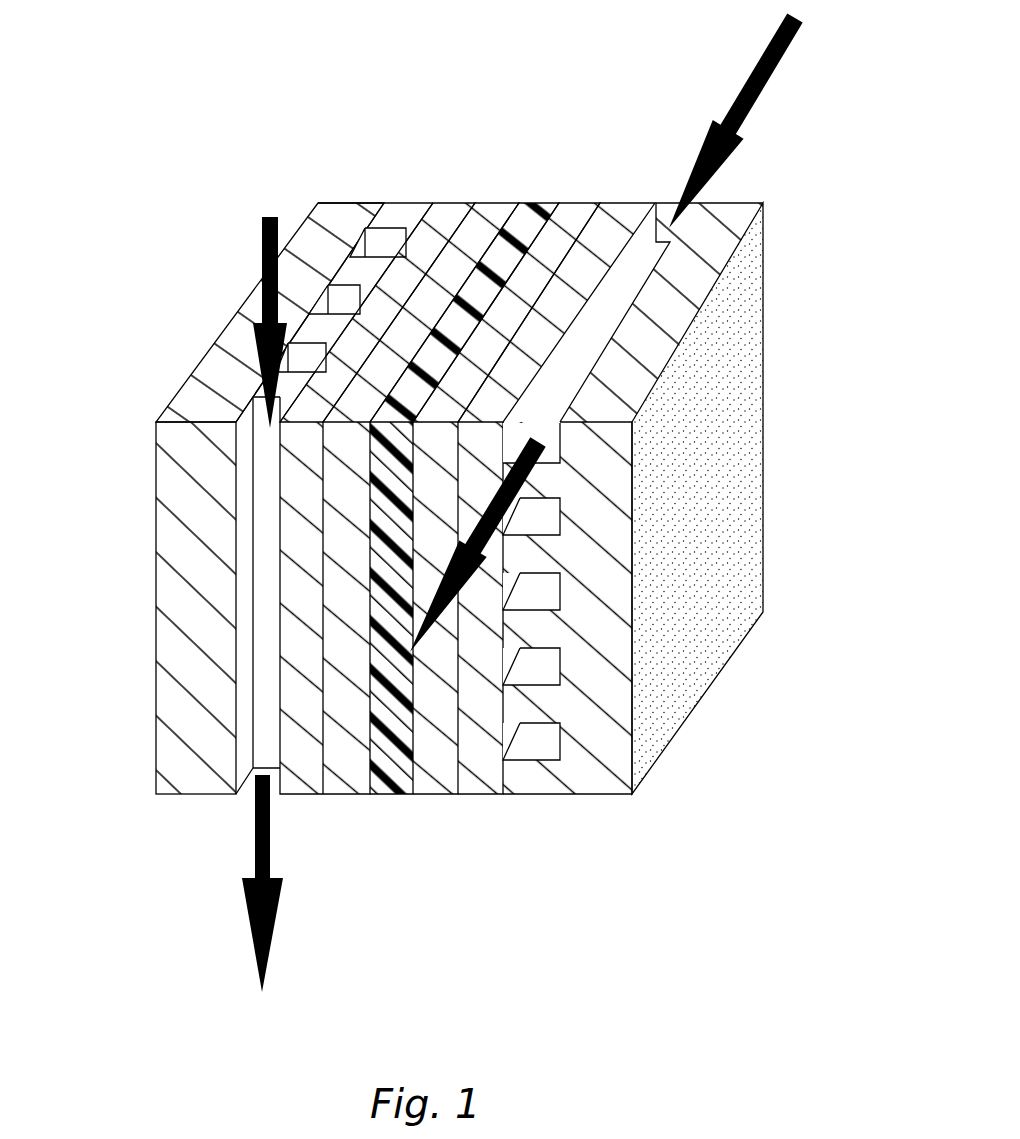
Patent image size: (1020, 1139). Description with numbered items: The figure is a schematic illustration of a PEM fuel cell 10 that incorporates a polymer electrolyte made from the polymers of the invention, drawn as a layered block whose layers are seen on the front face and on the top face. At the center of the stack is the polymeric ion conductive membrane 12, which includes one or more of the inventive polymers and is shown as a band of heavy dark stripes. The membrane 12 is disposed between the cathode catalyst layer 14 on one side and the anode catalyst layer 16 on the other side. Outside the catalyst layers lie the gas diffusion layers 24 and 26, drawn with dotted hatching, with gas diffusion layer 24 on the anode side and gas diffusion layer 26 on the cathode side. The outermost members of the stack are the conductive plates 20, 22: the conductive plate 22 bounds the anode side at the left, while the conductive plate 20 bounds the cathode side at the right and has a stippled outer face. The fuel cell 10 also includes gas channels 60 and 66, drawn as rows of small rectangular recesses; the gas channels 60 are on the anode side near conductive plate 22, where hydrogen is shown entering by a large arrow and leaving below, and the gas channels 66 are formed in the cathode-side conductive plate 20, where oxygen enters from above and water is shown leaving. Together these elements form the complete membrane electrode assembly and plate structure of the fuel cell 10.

The PEM fuel cell 10 is at (218, 149).
The polymeric ion conductive membrane 12 is at (543, 205).
The cathode catalyst layer 14 is at (577, 220).
The anode catalyst layer 16 is at (495, 215).
The conductive plate 20 is at (698, 561).
The conductive plate 22 is at (205, 405).
The gas diffusion layer 24 is at (443, 217).
The gas diffusion layer 26 is at (627, 220).
The gas channel 60 is at (380, 240).
The gas channel 66 is at (520, 680).